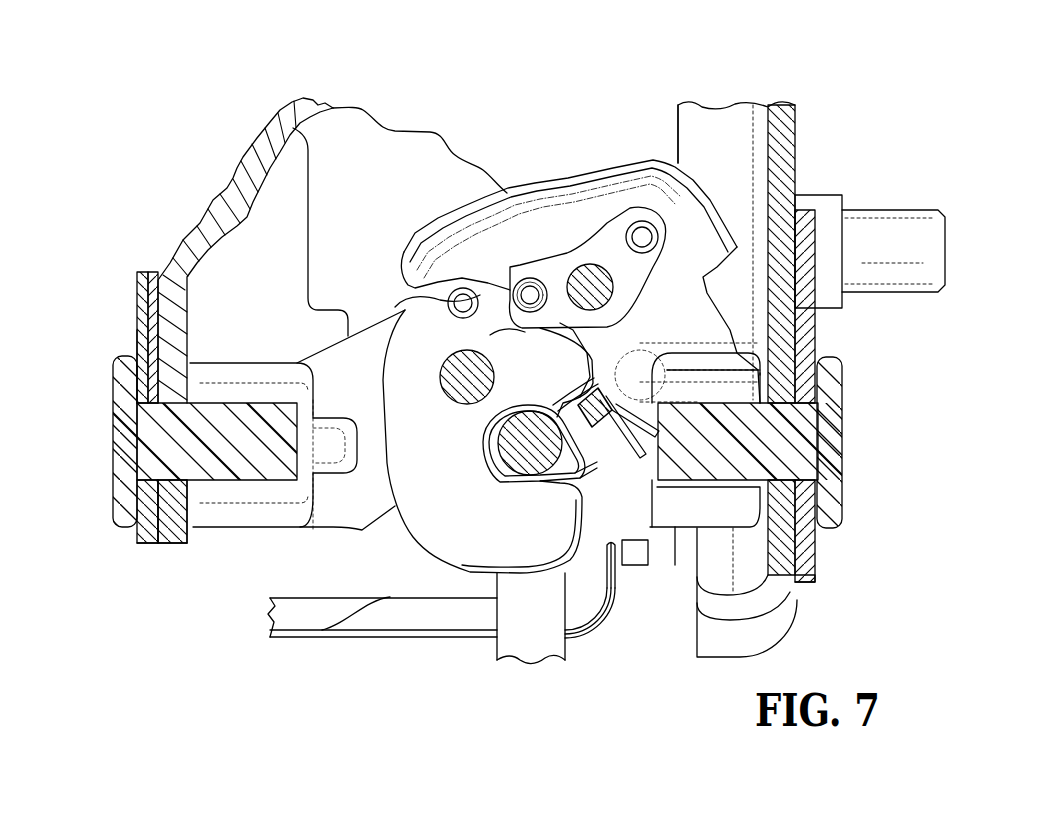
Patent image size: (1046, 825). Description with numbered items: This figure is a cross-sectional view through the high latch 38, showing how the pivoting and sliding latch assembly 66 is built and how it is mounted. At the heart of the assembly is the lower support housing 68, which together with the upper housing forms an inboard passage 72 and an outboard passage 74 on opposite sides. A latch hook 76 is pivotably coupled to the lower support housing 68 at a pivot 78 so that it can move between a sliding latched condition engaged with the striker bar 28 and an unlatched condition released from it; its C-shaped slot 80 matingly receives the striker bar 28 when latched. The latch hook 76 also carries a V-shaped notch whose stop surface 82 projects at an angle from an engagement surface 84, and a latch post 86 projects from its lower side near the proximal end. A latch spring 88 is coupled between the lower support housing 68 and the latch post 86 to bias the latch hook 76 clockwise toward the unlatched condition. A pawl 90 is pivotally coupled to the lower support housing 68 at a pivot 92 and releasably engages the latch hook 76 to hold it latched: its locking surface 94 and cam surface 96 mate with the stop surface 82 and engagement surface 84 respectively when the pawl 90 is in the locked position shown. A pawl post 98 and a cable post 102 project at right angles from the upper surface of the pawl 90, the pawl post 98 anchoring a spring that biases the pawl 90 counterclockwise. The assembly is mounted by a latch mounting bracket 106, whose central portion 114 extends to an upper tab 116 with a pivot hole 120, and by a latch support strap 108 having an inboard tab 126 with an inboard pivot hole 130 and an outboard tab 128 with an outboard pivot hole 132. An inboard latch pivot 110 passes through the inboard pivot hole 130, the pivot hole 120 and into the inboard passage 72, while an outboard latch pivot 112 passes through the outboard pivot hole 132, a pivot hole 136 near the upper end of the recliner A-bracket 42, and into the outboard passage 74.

The striker bar 28 is at (495, 474).
The high latch 38 is at (813, 174).
The recliner A-bracket 42 is at (783, 585).
The pivoting and sliding latch assembly 66 is at (700, 163).
The lower support housing 68 is at (637, 160).
The inboard passage 72 is at (207, 432).
The outboard passage 74 is at (713, 459).
The latch hook 76 is at (432, 568).
The pivot 78 is at (467, 378).
The C-shaped slot 80 is at (483, 447).
The stop surface 82 is at (458, 298).
The engagement surface 84 is at (547, 337).
The latch post 86 is at (413, 293).
The latch spring 88 is at (633, 390).
The pawl 90 is at (598, 226).
The pivot 92 is at (640, 288).
The locking surface 94 is at (475, 290).
The cam surface 96 is at (505, 334).
The pawl post 98 is at (528, 290).
The cable post 102 is at (640, 232).
The latch mounting bracket 106 is at (228, 174).
The latch support strap 108 is at (137, 280).
The inboard latch pivot 110 is at (113, 487).
The outboard latch pivot 112 is at (845, 488).
The central portion 114 is at (345, 137).
The upper tab 116 is at (172, 540).
The pivot hole 120 is at (172, 487).
The inboard tab 126 is at (150, 545).
The outboard tab 128 is at (806, 556).
The inboard pivot hole 130 is at (147, 372).
The outboard pivot hole 132 is at (808, 405).
The pivot hole 136 is at (805, 392).